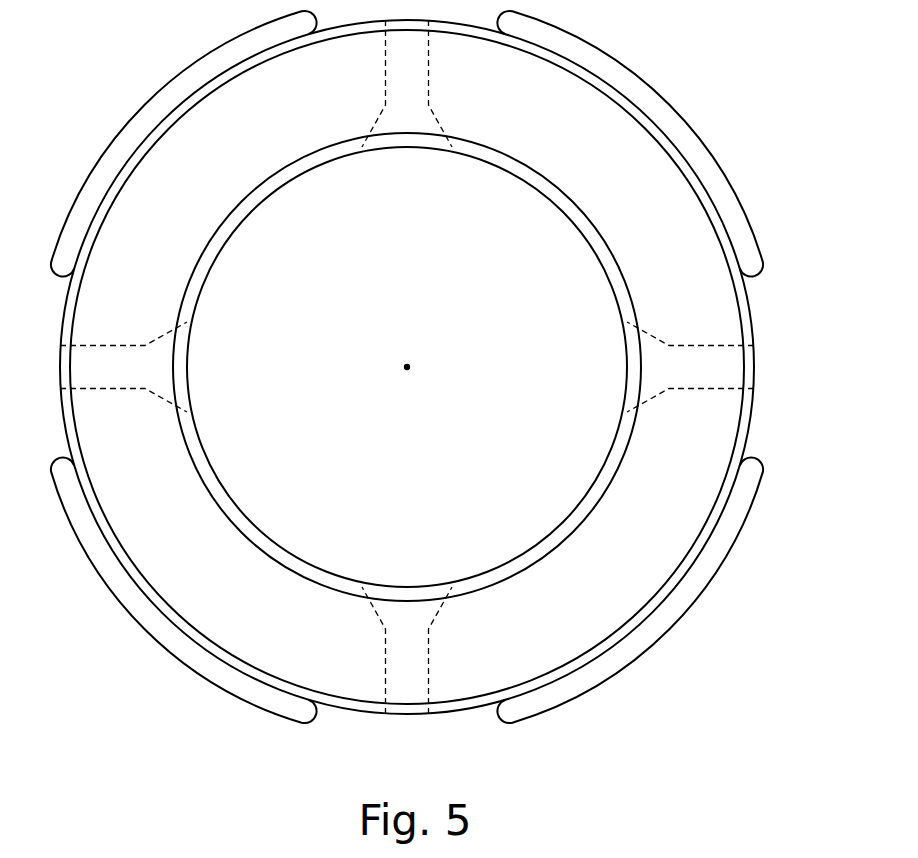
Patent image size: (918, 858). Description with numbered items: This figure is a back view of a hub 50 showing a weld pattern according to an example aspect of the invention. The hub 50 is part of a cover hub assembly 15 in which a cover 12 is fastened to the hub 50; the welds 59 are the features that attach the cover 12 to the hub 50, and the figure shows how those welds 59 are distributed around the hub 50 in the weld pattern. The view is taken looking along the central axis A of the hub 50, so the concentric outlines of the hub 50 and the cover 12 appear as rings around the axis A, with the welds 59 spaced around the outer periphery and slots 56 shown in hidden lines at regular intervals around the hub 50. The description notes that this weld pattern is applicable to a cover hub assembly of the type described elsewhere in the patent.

The blade support assembly 15 is at (752, 160).
The hub 50 is at (717, 318).
The cover 12 is at (422, 533).
The weld 59 is at (146, 106).
The slot 56 is at (428, 680).
The axis A is at (404, 368).